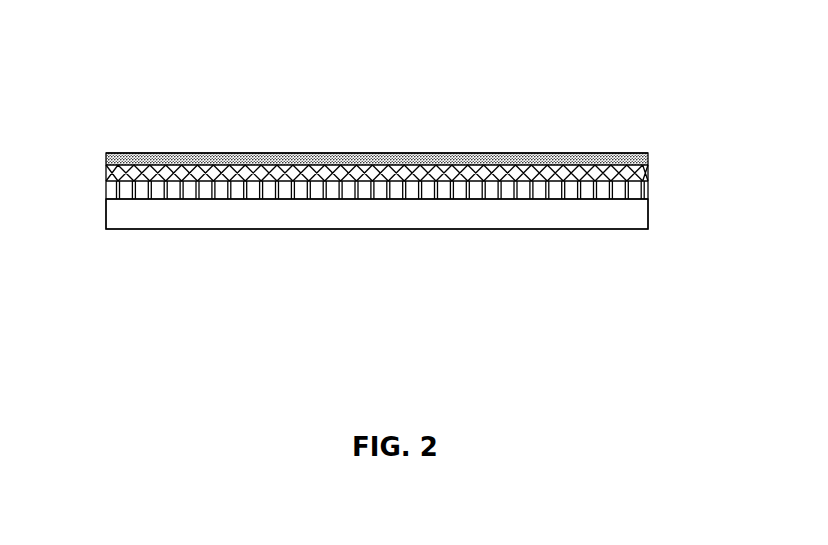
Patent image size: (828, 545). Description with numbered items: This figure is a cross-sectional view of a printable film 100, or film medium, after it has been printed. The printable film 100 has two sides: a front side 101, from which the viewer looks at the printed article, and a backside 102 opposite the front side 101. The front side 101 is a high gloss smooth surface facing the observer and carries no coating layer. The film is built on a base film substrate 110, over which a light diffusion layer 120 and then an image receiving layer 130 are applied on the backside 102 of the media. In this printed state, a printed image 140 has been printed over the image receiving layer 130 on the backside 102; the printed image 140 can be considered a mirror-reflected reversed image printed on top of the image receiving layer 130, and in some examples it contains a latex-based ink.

The printable film 100 is at (90, 58).
The front side 101 is at (229, 312).
The backside 102 is at (219, 110).
The base film substrate 110 is at (648, 213).
The light diffusion layer 120 is at (106, 183).
The image receiving layer 130 is at (648, 173).
The printed image 140 is at (105, 157).